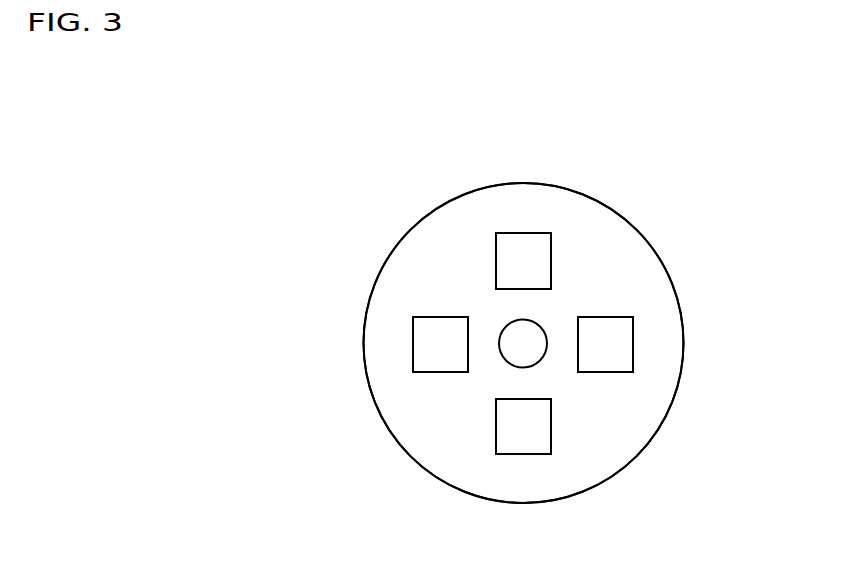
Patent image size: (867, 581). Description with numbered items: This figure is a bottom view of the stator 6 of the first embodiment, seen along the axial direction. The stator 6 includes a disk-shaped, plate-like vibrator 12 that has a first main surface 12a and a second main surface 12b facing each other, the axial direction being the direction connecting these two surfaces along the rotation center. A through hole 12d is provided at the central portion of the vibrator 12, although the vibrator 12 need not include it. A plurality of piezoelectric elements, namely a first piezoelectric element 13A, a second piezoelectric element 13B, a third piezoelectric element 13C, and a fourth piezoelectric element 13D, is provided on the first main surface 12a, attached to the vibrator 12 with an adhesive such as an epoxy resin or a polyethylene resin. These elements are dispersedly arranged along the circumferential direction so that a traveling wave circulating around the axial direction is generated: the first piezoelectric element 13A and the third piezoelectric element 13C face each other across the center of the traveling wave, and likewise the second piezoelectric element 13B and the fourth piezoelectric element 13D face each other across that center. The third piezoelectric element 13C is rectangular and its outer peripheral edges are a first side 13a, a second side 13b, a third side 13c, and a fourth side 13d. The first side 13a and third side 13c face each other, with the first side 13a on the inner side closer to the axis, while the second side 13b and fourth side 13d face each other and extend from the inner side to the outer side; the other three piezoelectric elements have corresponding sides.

The stator 6 is at (245, 165).
The vibrator 12 is at (605, 201).
The first main surface 12a is at (600, 233).
The second main surface 12b is at (638, 267).
The through hole 12d is at (517, 327).
The first piezoelectric element 13A is at (425, 338).
The second piezoelectric element 13B is at (507, 252).
The third piezoelectric element 13C is at (620, 333).
The fourth piezoelectric element 13D is at (507, 432).
The first side 13a is at (577, 355).
The second side 13b is at (622, 317).
The third side 13c is at (633, 354).
The fourth side 13d is at (610, 372).